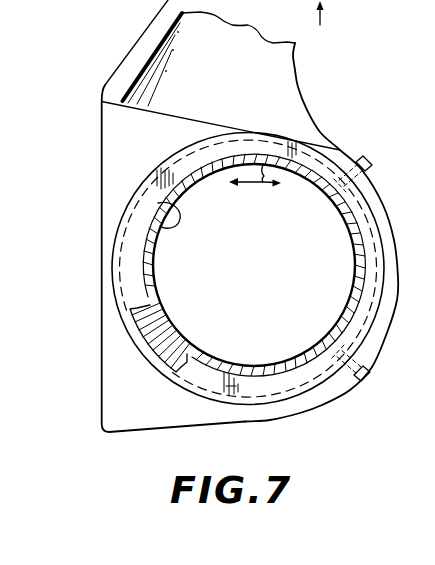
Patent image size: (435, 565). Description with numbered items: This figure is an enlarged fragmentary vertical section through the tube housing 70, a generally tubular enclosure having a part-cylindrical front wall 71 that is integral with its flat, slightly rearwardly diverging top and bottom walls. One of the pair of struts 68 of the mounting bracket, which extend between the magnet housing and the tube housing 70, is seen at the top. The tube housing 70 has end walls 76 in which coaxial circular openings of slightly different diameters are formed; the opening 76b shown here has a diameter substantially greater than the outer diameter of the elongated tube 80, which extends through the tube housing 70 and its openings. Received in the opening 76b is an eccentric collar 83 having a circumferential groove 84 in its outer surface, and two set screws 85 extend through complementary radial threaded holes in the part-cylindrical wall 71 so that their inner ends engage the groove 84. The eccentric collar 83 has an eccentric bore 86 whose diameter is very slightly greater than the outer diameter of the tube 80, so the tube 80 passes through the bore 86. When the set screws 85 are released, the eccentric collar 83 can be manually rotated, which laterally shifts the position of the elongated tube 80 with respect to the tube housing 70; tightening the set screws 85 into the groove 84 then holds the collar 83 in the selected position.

The struts 68 is at (278, 70).
The tube housing 70 is at (134, 138).
The part-cylindrical front wall 71 is at (398, 226).
The end walls 76 is at (117, 394).
The circular opening 76b is at (286, 393).
The elongated tube 80 is at (294, 368).
The eccentric collar 83 is at (137, 272).
The circumferential groove 84 is at (115, 234).
The set screws 85 is at (371, 166).
The eccentric bore 86 is at (158, 203).